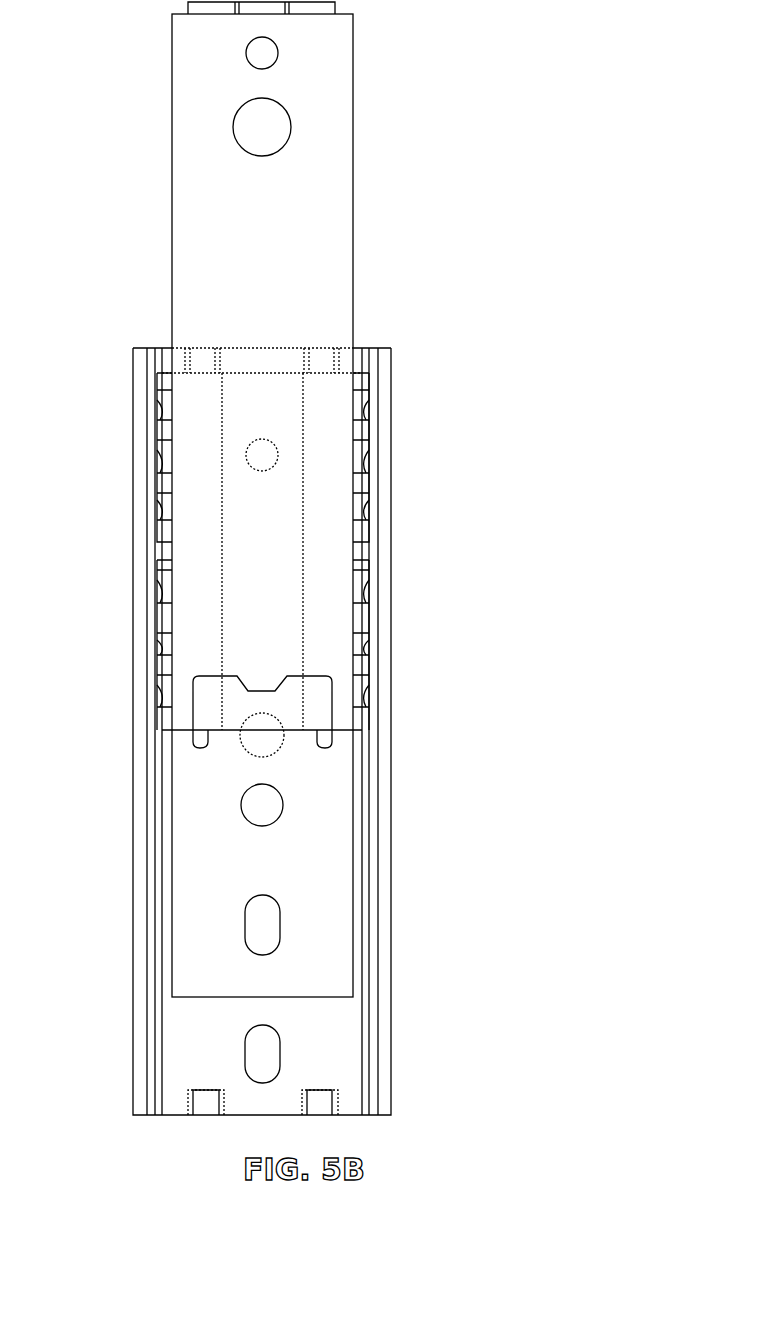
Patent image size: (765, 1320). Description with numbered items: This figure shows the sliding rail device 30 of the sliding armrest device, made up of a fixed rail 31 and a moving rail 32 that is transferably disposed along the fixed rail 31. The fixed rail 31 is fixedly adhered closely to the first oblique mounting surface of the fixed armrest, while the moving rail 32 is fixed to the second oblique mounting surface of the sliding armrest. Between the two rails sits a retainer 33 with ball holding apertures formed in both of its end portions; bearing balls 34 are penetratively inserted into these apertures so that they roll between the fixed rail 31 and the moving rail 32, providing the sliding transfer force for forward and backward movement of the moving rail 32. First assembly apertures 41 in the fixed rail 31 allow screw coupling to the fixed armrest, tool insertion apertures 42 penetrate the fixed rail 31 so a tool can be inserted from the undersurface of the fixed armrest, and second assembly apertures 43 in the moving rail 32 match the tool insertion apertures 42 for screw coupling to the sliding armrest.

The sliding rail device 30 is at (126, 280).
The fixed rail 31 is at (325, 238).
The moving rail 32 is at (385, 598).
The retainer 33 is at (355, 405).
The bearing ball 34 is at (357, 505).
The first assembly aperture 41 is at (265, 53).
The tool insertion aperture 42 is at (272, 128).
The second assembly aperture 43 is at (270, 452).